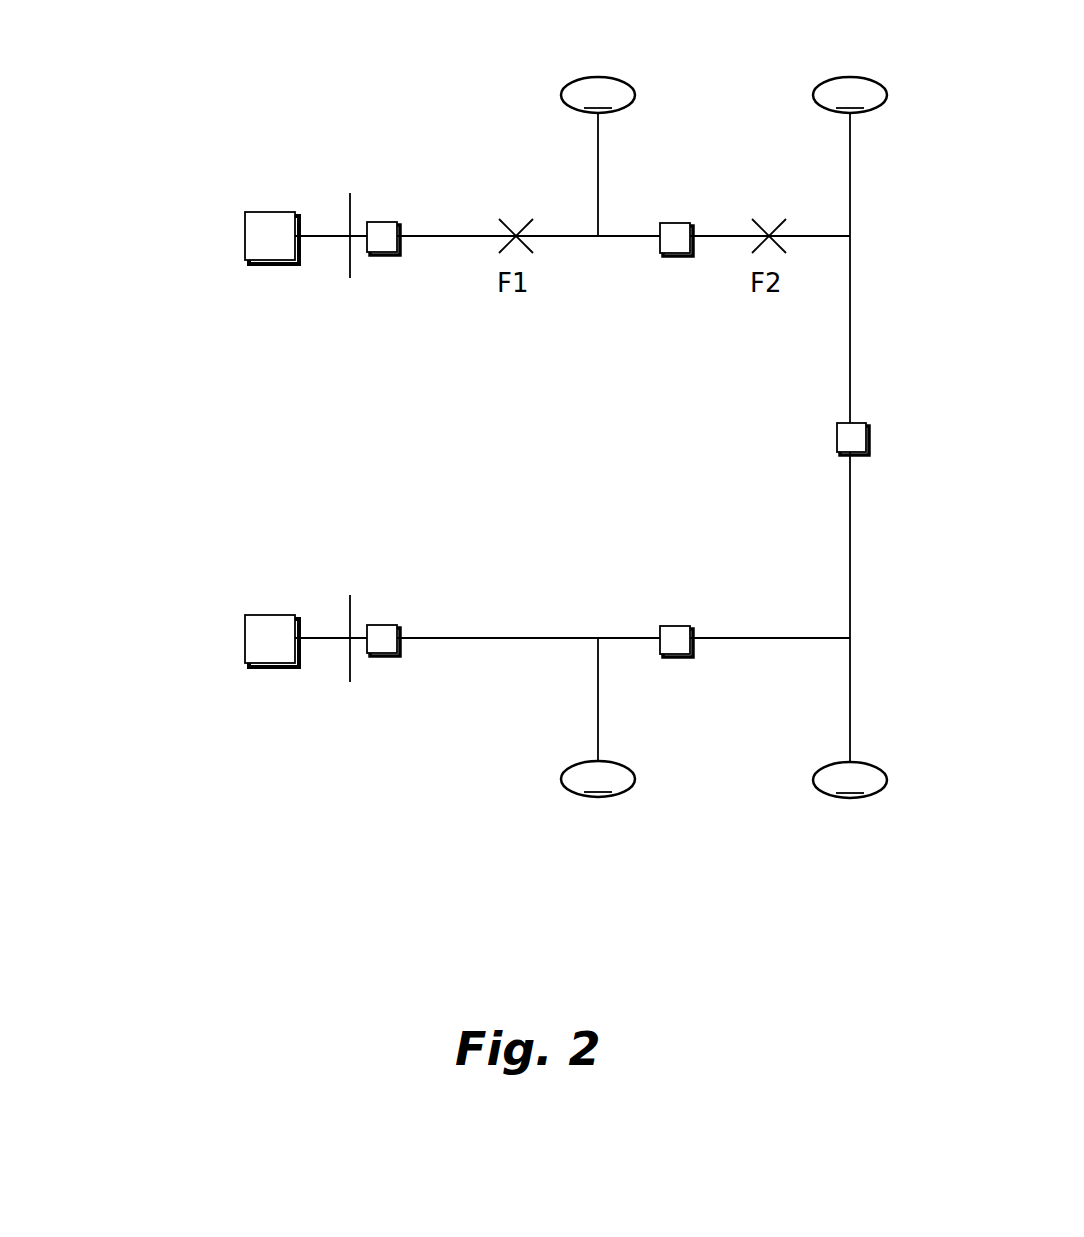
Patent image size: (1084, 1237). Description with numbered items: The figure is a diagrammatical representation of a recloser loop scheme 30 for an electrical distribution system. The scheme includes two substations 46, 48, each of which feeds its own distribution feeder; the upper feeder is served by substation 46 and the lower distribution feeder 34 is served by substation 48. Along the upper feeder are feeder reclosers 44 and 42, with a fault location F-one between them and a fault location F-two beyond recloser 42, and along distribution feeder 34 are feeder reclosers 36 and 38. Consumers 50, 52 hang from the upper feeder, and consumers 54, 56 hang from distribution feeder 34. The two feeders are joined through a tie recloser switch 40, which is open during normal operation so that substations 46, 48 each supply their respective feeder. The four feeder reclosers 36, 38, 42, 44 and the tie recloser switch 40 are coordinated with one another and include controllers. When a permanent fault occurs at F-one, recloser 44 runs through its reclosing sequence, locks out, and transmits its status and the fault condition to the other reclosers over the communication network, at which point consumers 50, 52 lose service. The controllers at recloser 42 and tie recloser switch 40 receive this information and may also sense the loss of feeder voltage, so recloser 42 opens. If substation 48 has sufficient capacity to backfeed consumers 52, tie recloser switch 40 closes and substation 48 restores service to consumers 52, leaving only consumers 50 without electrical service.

The recloser loop scheme 30 is at (170, 91).
The distribution feeder 34 is at (537, 640).
The feeder recloser 36 is at (392, 625).
The feeder recloser 38 is at (680, 626).
The tie recloser switch 40 is at (837, 438).
The feeder recloser 42 is at (676, 223).
The feeder recloser 44 is at (392, 222).
The substation 46 is at (245, 212).
The substation 48 is at (245, 615).
The consumers 50 is at (598, 95).
The consumers 52 is at (850, 95).
The consumers 54 is at (598, 779).
The consumers 56 is at (850, 780).